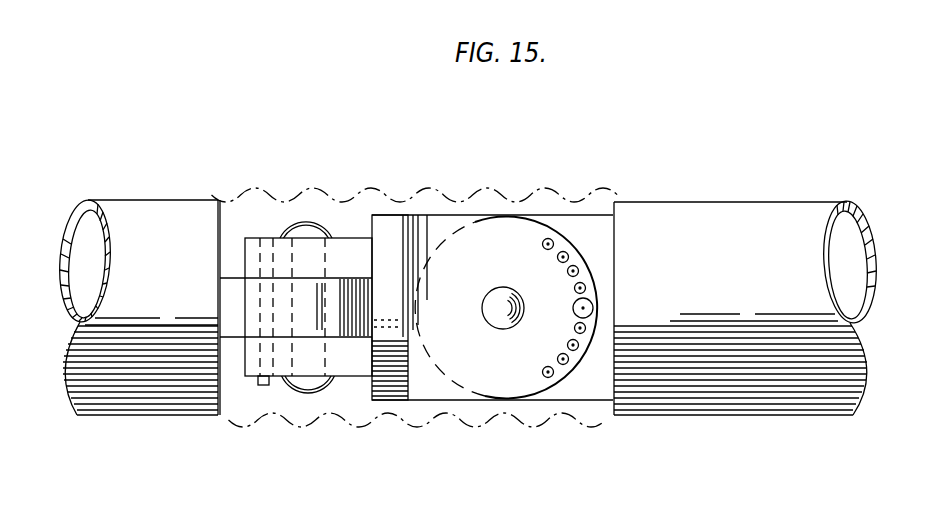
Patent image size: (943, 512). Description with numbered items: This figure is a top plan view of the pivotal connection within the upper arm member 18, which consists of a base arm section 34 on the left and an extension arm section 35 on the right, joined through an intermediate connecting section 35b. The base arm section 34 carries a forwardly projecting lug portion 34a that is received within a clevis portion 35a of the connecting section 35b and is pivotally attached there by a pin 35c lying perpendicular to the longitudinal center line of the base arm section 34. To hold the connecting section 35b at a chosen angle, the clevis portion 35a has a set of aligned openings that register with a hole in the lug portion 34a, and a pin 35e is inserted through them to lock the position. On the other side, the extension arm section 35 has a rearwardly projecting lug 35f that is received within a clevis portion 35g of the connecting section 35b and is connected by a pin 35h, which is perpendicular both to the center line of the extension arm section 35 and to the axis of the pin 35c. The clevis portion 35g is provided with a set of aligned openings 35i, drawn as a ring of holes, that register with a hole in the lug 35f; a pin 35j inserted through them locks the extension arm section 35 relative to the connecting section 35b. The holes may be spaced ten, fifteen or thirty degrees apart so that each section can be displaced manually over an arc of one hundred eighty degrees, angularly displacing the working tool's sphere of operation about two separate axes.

The upper arm member 18 is at (513, 195).
The base arm section 34 is at (143, 360).
The lug portion 34a is at (347, 296).
The extension arm section 35 is at (727, 393).
The clevis portion 35a is at (345, 370).
The connecting section 35b is at (374, 406).
The pin 35c is at (310, 222).
The pin 35e is at (264, 386).
The lug 35f is at (599, 383).
The clevis portion 35g is at (510, 384).
The pin 35h is at (503, 312).
The openings 35i is at (586, 289).
The pin 35j is at (592, 314).